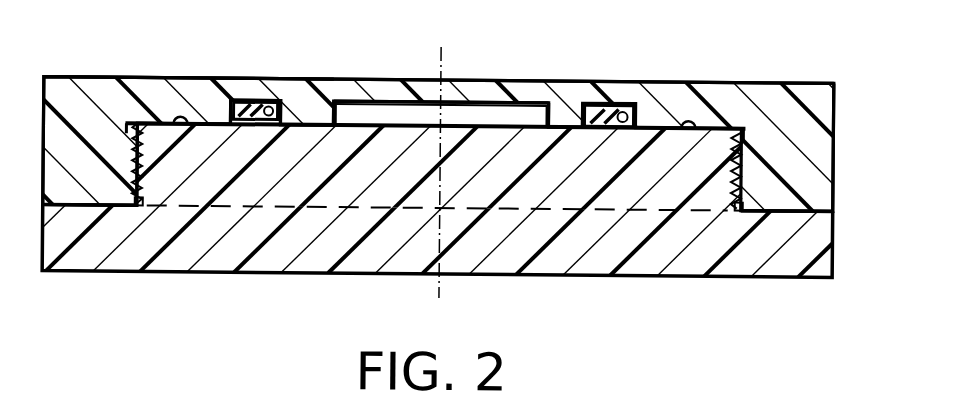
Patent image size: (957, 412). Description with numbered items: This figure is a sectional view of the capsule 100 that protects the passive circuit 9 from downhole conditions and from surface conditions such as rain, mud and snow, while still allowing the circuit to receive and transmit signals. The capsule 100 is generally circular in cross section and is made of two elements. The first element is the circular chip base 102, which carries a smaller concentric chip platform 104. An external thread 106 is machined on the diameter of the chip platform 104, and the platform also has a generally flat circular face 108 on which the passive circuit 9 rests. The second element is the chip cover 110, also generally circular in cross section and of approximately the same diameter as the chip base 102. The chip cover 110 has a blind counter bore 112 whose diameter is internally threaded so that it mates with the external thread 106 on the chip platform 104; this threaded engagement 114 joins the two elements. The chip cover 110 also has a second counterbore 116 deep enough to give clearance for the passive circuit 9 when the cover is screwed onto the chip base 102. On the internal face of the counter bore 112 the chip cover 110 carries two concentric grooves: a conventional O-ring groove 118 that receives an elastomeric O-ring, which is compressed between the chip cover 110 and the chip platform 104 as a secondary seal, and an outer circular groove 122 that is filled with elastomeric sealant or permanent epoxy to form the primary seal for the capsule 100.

The capsule 100 is at (596, 27).
The chip base 102 is at (540, 274).
The chip platform 104 is at (245, 189).
The external thread 106 is at (148, 106).
The flat circular face 108 is at (563, 125).
The chip cover 110 is at (280, 76).
The blind counter bore 112 is at (737, 106).
The threads 114 is at (742, 158).
The second counterbore 116 is at (400, 90).
The O-ring groove 118 is at (270, 101).
The outer circular groove 122 is at (177, 115).
The passive circuit 9 is at (490, 118).